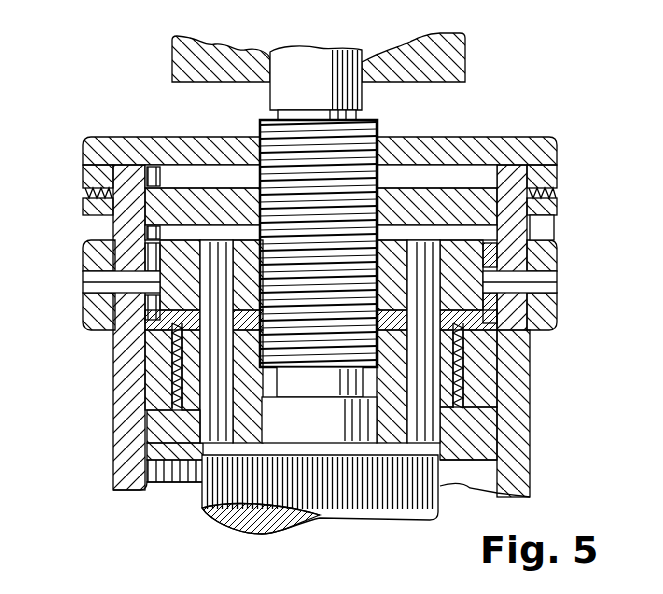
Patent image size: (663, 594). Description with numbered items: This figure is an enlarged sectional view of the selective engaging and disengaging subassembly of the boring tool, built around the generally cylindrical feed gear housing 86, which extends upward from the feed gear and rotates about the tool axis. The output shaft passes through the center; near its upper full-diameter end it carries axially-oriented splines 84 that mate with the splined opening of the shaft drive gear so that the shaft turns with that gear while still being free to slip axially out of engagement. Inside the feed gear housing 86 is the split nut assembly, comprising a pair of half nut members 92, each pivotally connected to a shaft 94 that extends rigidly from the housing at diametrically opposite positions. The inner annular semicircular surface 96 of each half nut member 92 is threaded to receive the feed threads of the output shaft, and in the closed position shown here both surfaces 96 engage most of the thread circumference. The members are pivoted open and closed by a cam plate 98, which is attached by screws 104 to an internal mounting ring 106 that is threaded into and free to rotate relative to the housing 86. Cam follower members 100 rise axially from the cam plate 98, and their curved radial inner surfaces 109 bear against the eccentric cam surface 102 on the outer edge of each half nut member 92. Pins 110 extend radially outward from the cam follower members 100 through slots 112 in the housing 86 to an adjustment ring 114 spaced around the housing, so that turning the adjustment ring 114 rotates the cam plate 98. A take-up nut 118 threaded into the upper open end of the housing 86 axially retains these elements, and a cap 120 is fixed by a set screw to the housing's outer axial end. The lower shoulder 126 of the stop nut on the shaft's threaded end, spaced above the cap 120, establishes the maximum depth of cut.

The axially-oriented splines 84 is at (353, 505).
The feed gear housing 86 is at (556, 162).
The half nut member 92 is at (473, 258).
The shaft 94 is at (228, 377).
The inner annular semicircular surface 96 is at (391, 200).
The cam plate 98 is at (147, 323).
The cam follower member 100 is at (148, 252).
The cam surface 102 is at (530, 342).
The screws 104 is at (168, 362).
The internal mounting ring 106 is at (160, 397).
The curved radial inner surface 109 is at (535, 233).
The pin 110 is at (95, 280).
The slot 112 is at (555, 303).
The adjustment ring 114 is at (90, 312).
The take-up nut 118 is at (440, 198).
The cap 120 is at (487, 137).
The lower shoulder 126 is at (200, 83).